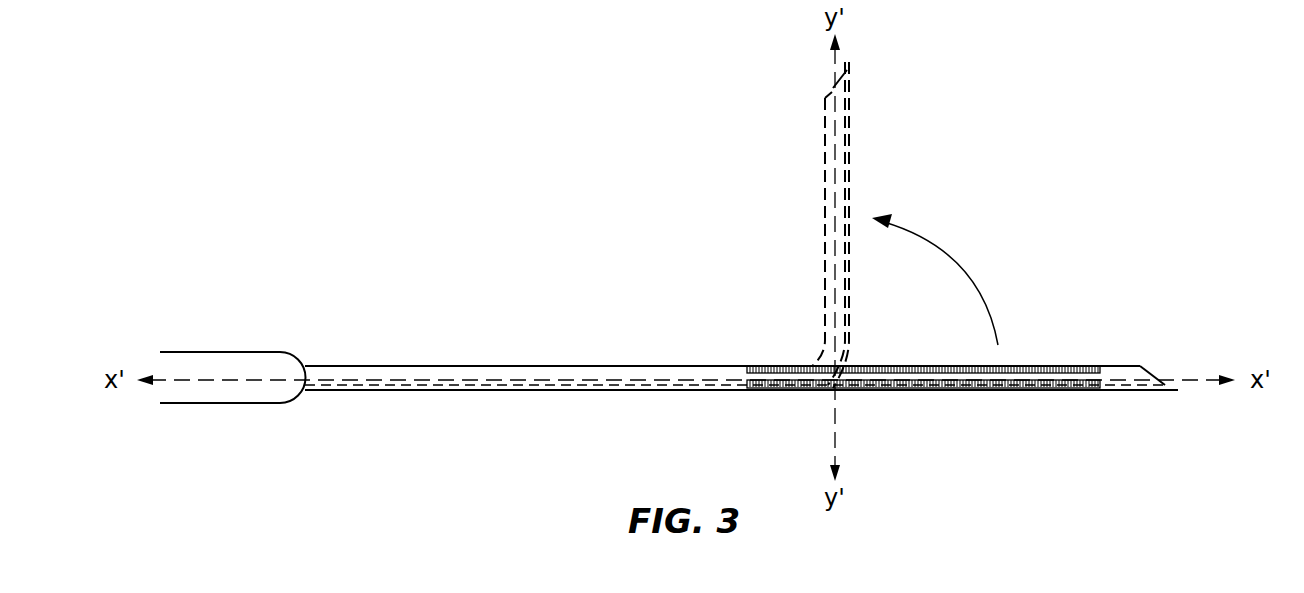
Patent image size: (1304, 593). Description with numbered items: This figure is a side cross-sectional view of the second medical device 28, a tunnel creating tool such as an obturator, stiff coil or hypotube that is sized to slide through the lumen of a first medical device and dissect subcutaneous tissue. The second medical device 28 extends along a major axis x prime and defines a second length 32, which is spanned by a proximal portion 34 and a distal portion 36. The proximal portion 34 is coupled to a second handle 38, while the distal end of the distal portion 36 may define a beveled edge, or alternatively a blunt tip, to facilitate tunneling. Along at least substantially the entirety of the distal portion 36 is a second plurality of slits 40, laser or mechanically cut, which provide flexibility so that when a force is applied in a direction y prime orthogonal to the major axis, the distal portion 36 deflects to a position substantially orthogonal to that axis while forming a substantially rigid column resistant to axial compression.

The second medical device 28 is at (544, 198).
The second length 32 is at (1168, 429).
The proximal portion 34 is at (716, 318).
The distal portion 36 is at (764, 317).
The second handle 38 is at (216, 403).
The second plurality of slits 40 is at (1058, 392).